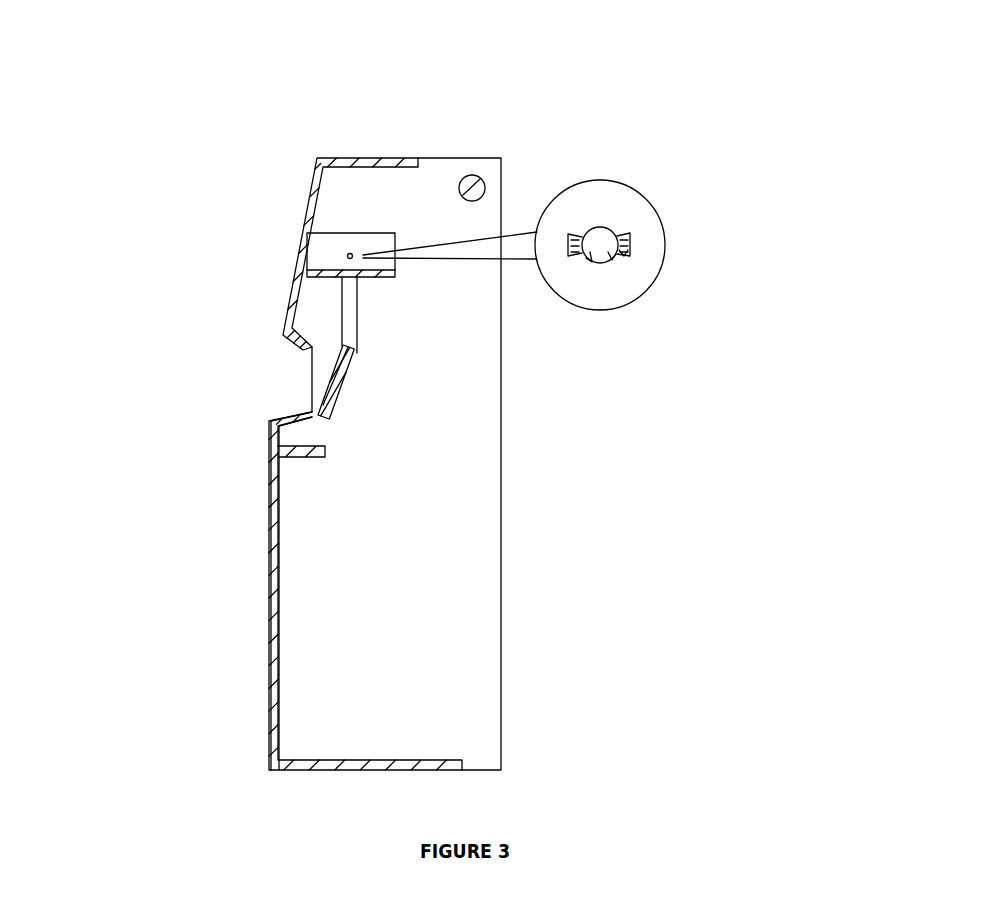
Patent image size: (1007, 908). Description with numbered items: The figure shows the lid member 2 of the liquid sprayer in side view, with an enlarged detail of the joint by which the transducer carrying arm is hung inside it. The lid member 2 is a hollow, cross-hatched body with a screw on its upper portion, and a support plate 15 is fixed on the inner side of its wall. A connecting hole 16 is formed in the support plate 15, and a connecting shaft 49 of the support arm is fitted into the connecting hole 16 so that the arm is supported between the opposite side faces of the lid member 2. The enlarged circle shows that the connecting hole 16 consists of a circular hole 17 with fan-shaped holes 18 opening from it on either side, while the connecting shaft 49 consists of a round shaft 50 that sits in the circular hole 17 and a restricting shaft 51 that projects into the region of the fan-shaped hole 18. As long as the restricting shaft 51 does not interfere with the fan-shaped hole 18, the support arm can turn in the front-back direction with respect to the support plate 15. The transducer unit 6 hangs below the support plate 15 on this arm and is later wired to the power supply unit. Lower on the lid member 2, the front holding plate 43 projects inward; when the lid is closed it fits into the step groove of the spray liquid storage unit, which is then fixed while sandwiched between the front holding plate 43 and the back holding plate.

The lid member 2 is at (464, 107).
The transducer unit 6 is at (360, 321).
The support plate 15 is at (313, 236).
The connecting hole 16 is at (587, 212).
The circular hole 17 is at (612, 222).
The fan-shaped hole 18 is at (624, 237).
The front holding plate 43 is at (293, 445).
The connecting shaft 49 is at (590, 268).
The round shaft 50 is at (608, 256).
The restricting shaft 51 is at (621, 254).